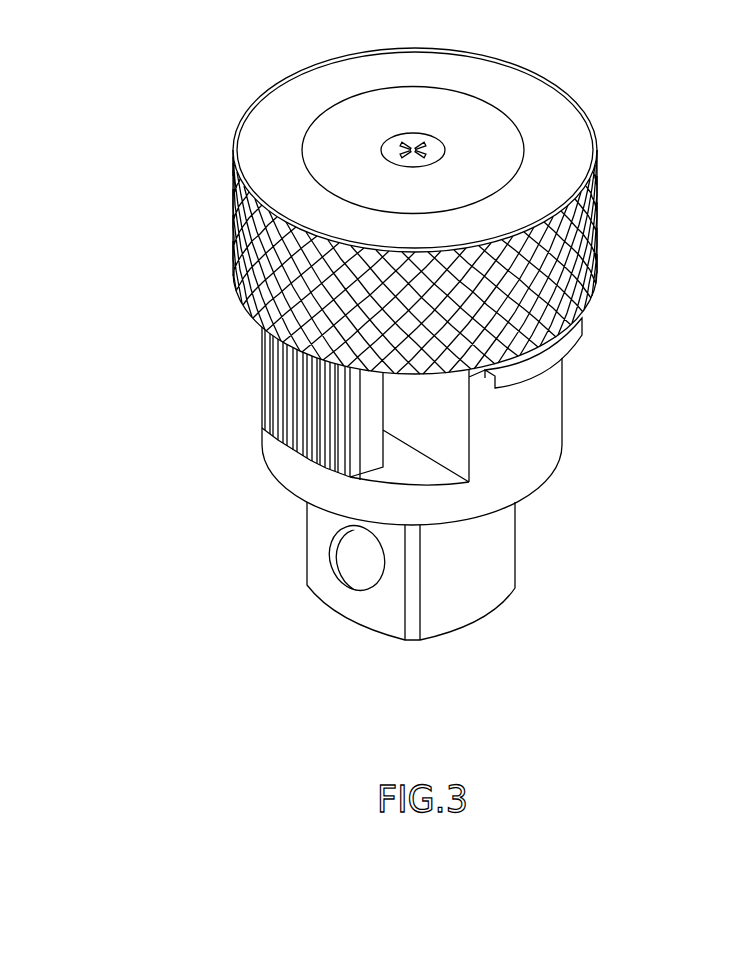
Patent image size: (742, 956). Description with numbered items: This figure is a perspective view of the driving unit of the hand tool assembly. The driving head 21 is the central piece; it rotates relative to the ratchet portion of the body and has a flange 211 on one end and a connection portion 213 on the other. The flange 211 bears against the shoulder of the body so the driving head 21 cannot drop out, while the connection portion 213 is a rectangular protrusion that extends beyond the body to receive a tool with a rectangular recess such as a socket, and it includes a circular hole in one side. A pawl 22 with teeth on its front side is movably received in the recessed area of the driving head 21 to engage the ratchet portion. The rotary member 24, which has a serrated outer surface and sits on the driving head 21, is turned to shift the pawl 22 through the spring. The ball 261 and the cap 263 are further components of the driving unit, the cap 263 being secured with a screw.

The driving head 21 is at (530, 462).
The flange 211 is at (568, 348).
The connection portion 213 is at (500, 598).
The pawl 22 is at (268, 388).
The rotary member 24 is at (240, 245).
The ball 261 is at (345, 555).
The cap 263 is at (350, 122).